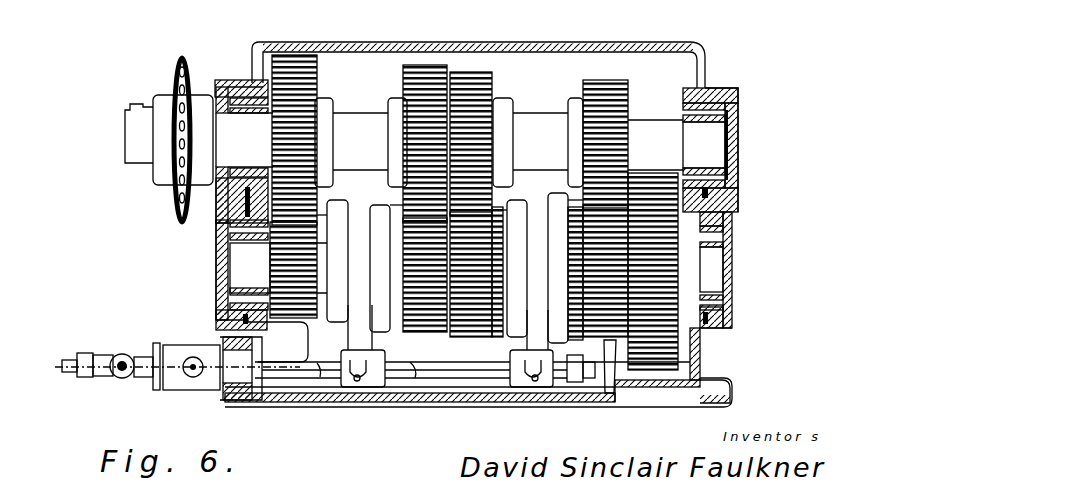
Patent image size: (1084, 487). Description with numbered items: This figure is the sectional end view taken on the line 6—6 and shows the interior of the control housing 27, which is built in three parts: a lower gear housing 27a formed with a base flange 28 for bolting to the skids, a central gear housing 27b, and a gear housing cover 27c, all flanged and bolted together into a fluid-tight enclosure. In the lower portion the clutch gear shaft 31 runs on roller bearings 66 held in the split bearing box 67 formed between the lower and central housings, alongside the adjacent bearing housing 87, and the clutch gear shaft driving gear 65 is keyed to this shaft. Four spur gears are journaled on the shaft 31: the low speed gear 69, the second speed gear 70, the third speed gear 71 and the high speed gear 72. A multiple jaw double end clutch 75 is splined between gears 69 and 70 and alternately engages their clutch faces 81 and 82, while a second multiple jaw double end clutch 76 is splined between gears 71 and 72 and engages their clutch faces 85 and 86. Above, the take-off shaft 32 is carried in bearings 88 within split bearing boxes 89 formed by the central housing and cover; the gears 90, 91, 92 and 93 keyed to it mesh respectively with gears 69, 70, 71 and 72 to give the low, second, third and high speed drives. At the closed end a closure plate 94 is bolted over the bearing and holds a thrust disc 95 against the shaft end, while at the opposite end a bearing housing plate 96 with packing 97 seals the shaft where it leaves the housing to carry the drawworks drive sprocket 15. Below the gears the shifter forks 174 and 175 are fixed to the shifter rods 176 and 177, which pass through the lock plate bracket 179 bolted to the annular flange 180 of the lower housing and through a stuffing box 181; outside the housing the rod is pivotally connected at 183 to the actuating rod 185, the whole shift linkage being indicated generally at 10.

The section line 6 is at (520, 43).
The shift rod 10 is at (48, 354).
The drawworks drive sprocket 15 is at (176, 68).
The housing 27 is at (440, 43).
The lower gear housing 27a is at (248, 330).
The central gear housing 27b is at (225, 213).
The gear housing cover 27c is at (640, 44).
The base flange 28 is at (730, 398).
The clutch gear shaft 31 is at (712, 277).
The take-off shaft 32 is at (740, 140).
The clutch gear shaft driving gear 65 is at (679, 355).
The roller bearings 66 is at (714, 302).
The split bearing box 67 is at (737, 223).
The low speed gear 69 is at (311, 322).
The second speed gear 70 is at (420, 322).
The third speed gear 71 is at (462, 324).
The high speed gear 72 is at (611, 394).
The multiple jaw double end clutch 75 is at (374, 206).
The multiple jaw double end clutch 76 is at (553, 194).
The clutch face 81 is at (320, 218).
The clutch face 82 is at (402, 185).
The gear clutch face 85 is at (507, 190).
The gear clutch face 86 is at (577, 195).
The bearing housing 87 is at (730, 262).
The bearings 88 is at (246, 110).
The split bearing boxes 89 is at (231, 80).
The take-off shaft gear 90 is at (305, 83).
The take-off shaft gear 91 is at (406, 78).
The take-off shaft gear 92 is at (495, 82).
The take-off shaft gear 93 is at (628, 93).
The closure plate 94 is at (738, 112).
The thrust disc 95 is at (742, 150).
The bearing housing plate 96 is at (245, 80).
The packing 97 is at (222, 167).
The shifter fork 174 is at (355, 352).
The shifter fork 175 is at (518, 352).
The shifter fork rod 176 is at (333, 378).
The shifter rod 177 is at (452, 380).
The lock plate bracket 179 is at (190, 390).
The annular flange 180 is at (245, 400).
The stuffing box 181 is at (152, 386).
The pivotal connection 183 is at (121, 355).
The actuating rod 185 is at (70, 378).